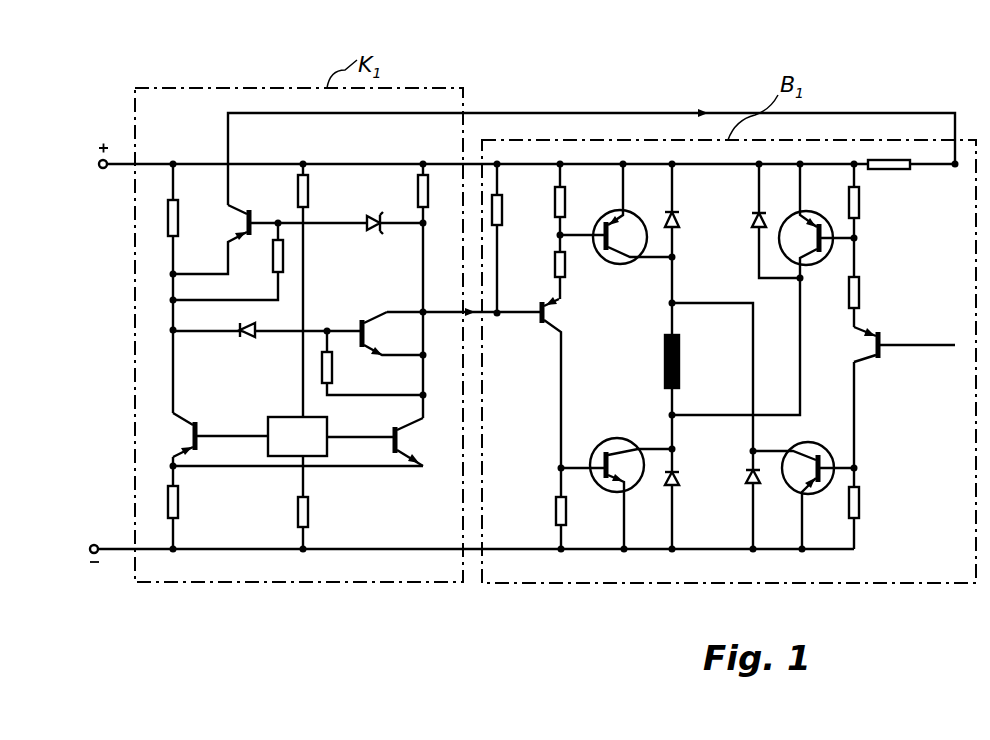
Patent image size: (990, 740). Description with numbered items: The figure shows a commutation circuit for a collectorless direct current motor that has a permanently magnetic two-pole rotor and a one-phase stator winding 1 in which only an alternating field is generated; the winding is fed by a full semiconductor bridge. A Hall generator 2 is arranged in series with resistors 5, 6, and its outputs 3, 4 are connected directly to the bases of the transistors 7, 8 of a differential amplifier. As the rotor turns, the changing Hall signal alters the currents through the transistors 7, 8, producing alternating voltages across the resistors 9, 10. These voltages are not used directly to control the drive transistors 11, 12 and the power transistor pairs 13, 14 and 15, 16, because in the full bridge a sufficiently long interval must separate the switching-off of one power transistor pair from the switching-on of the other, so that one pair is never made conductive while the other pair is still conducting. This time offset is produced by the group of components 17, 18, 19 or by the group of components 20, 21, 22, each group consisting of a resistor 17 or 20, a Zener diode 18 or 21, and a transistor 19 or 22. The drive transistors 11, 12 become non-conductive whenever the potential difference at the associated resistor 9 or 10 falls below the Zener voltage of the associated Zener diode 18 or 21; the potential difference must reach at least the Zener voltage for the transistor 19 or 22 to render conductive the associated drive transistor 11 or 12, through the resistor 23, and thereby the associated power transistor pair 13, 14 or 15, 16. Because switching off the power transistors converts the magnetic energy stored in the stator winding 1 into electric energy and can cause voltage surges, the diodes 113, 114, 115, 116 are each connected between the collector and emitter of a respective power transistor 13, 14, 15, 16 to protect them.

The stator winding 1 is at (434, 426).
The Hall generator 2 is at (297, 426).
The Hall generator output 3 is at (277, 439).
The Hall generator output 4 is at (319, 439).
The resistor 5 is at (311, 191).
The resistor 6 is at (311, 512).
The transistor 7 is at (220, 431).
The transistor 8 is at (375, 437).
The resistor 9 is at (181, 218).
The resistor 10 is at (437, 191).
The drive transistor 11 is at (904, 339).
The drive transistor 12 is at (544, 382).
The power transistor 13 is at (632, 213).
The power transistor 14 is at (616, 485).
The power transistor 15 is at (816, 221).
The power transistor 16 is at (803, 488).
The resistor 17 is at (372, 363).
The Zener diode 18 is at (249, 343).
The transistor 19 is at (390, 324).
The resistor 20 is at (228, 261).
The Zener diode 21 is at (374, 214).
The transistor 22 is at (541, 217).
The resistor 23 is at (510, 237).
The diode 113 is at (690, 231).
The diode 114 is at (692, 491).
The diode 115 is at (763, 220).
The diode 116 is at (738, 500).